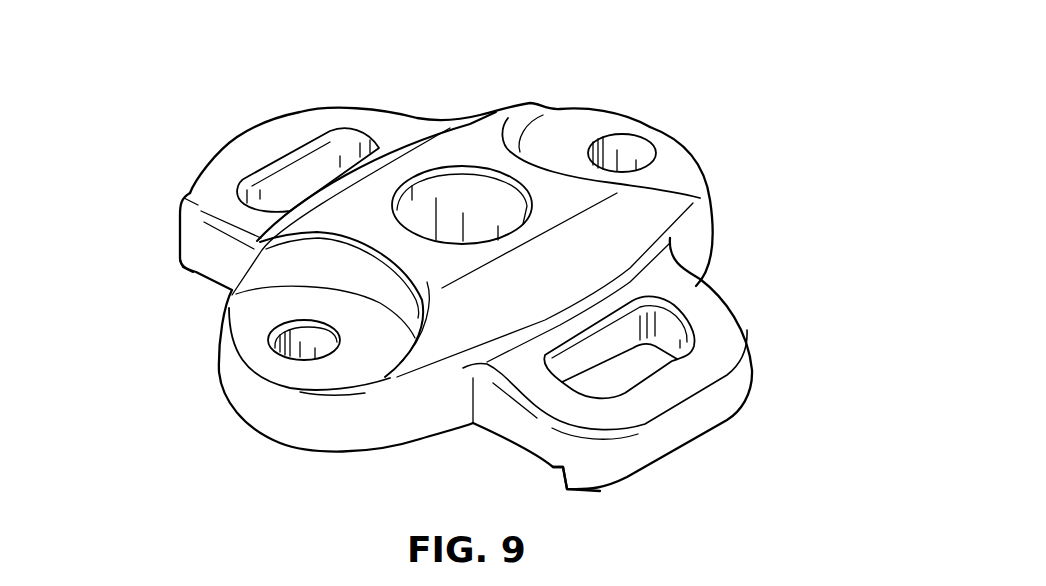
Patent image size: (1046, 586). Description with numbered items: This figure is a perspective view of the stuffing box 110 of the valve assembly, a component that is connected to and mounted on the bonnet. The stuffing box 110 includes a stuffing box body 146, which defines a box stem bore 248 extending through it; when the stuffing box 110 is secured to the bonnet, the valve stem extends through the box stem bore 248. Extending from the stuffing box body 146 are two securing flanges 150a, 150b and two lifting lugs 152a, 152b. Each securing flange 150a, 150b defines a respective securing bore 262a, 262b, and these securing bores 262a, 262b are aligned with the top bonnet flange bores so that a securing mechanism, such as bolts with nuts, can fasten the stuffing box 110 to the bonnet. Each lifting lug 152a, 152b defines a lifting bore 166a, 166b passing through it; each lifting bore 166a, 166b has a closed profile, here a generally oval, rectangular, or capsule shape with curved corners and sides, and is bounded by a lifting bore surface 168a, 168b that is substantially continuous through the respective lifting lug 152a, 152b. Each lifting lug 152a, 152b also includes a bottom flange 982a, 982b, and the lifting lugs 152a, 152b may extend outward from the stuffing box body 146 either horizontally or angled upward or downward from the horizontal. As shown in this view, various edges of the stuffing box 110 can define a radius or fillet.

The stuffing box 110 is at (854, 157).
The stuffing box body 146 is at (460, 123).
The box stem bore 248 is at (477, 188).
The securing flange 150a is at (254, 334).
The securing bore 262a is at (310, 347).
The securing flange 150b is at (587, 125).
The securing bore 262b is at (638, 142).
The lifting lug 152a is at (196, 200).
The lifting bore 166a is at (302, 150).
The lifting bore surface 168a is at (282, 178).
The bottom flange 982a is at (185, 266).
The lifting lug 152b is at (740, 354).
The lifting bore 166b is at (689, 326).
The lifting bore surface 168b is at (667, 322).
The bottom flange 982b is at (562, 488).